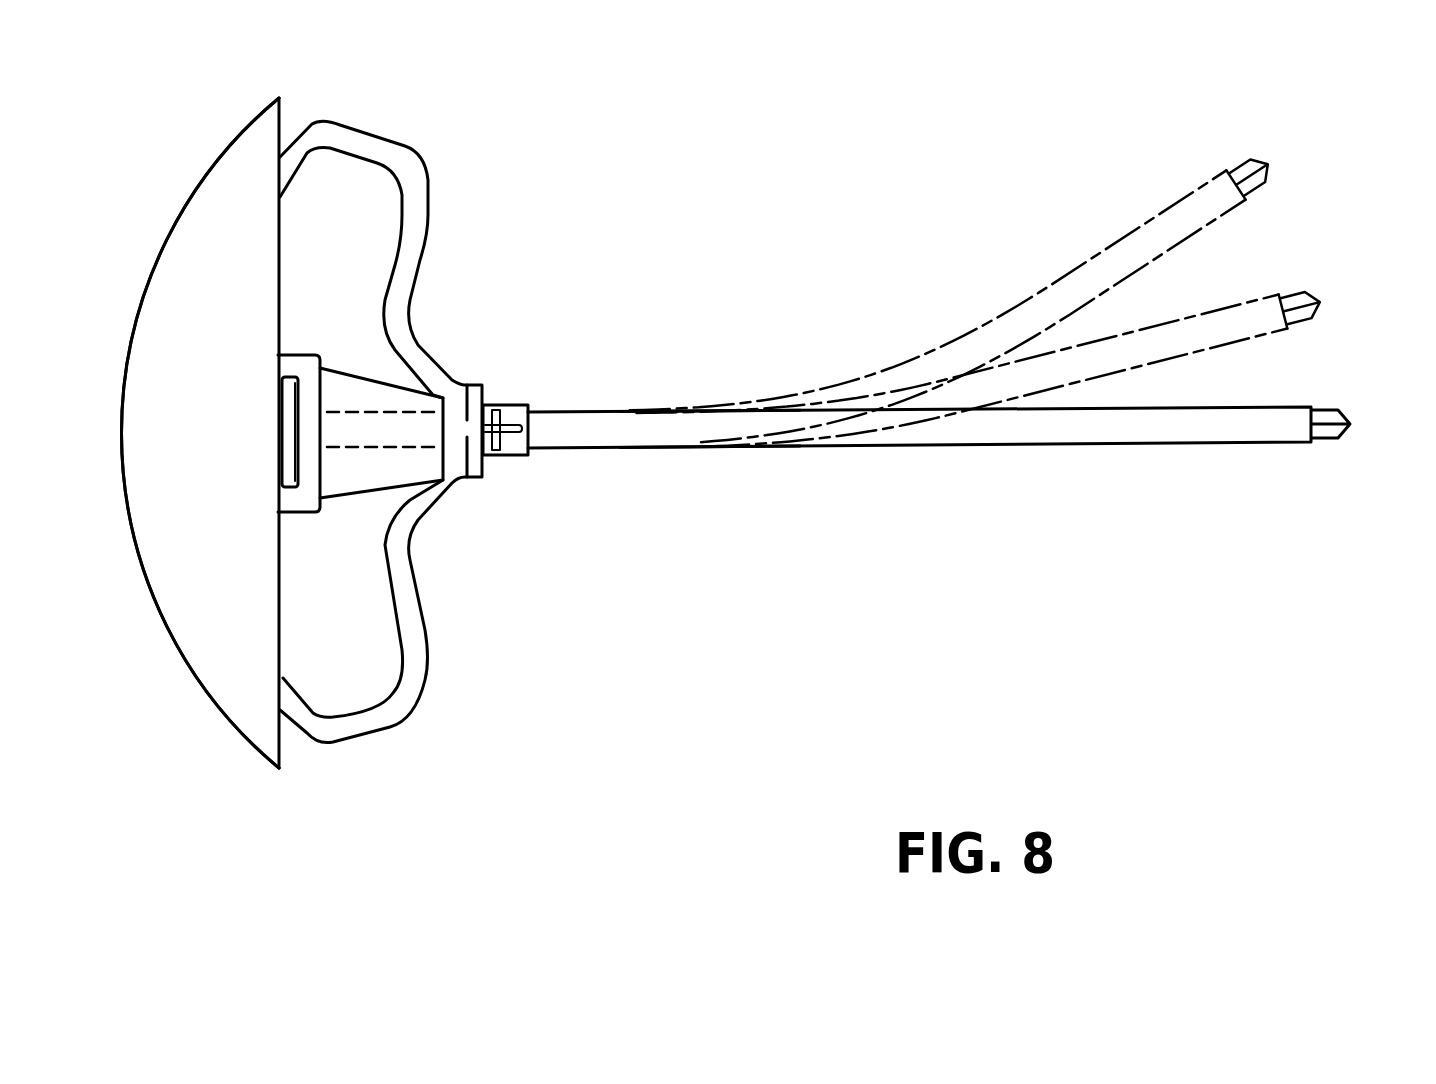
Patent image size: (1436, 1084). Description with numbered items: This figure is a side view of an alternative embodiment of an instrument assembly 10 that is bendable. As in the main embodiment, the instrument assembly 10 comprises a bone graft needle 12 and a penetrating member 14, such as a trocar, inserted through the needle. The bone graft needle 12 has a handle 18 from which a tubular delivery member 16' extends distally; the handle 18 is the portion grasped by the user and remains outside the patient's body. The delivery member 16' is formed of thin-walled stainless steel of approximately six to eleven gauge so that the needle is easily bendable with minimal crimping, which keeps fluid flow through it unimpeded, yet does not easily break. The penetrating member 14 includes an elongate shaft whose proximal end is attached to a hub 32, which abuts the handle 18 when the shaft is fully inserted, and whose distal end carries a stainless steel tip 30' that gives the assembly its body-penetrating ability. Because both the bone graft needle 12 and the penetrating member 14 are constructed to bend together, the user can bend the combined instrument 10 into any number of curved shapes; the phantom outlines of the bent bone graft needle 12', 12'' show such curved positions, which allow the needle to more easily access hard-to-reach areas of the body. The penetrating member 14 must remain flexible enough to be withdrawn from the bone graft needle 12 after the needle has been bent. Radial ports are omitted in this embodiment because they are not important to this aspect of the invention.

The instrument assembly 10 is at (752, 434).
The bone graft needle 12 is at (794, 433).
The bone graft needle in bent position 12' is at (981, 337).
The bone graft needle in bent position 12'' is at (954, 296).
The penetrating member 14 is at (238, 180).
The tubular delivery member 16' is at (772, 454).
The handle 18 is at (413, 655).
The stainless steel tip 30' is at (1345, 465).
The hub 32 is at (190, 667).